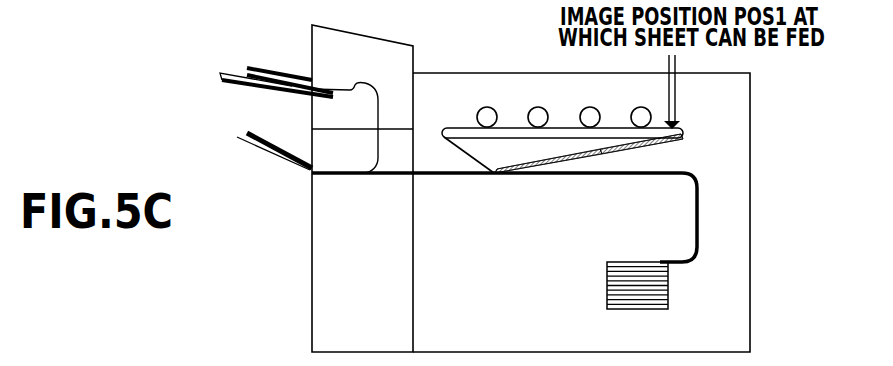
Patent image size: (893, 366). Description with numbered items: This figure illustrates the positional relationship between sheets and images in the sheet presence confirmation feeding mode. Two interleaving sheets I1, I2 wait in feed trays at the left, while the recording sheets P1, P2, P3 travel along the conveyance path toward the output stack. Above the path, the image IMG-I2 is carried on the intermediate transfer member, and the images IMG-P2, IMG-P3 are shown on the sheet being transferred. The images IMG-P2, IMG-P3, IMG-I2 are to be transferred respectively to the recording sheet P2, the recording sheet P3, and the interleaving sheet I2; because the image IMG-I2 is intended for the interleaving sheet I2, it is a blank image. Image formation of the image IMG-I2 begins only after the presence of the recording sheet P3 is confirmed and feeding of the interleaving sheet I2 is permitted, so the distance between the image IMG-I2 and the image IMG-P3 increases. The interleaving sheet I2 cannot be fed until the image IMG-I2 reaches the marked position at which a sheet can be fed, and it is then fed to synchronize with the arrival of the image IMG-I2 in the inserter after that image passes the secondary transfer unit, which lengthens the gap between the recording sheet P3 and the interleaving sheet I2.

The interleaving sheet I2 is at (271, 68).
The interleaving sheet I1 is at (284, 150).
The image IMG-I2 is at (477, 108).
The recording sheet P1 is at (440, 175).
The recording sheet P2 is at (525, 175).
The image IMG-P2 is at (533, 172).
The image IMG-P3 is at (615, 155).
The recording sheet P3 is at (661, 262).